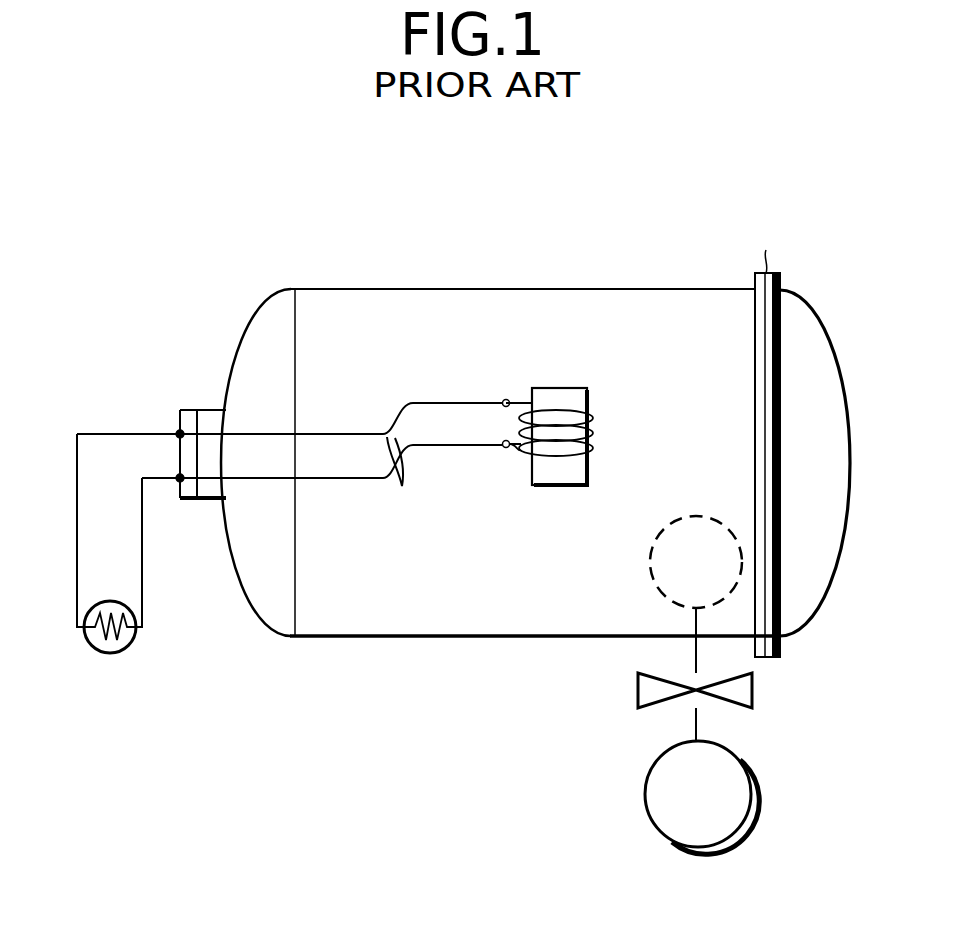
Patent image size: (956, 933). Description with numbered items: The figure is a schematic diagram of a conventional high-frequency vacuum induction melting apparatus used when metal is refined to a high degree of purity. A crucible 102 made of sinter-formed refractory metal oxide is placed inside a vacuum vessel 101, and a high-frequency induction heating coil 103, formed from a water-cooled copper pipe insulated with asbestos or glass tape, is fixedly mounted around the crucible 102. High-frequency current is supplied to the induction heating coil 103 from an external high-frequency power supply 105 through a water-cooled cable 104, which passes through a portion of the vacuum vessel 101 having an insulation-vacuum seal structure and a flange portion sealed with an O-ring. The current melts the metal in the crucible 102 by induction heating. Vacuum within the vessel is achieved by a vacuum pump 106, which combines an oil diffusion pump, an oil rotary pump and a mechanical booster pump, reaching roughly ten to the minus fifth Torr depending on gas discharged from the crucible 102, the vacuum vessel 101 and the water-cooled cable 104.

The vacuum vessel 101 is at (533, 255).
The crucible 102 is at (560, 503).
The high-frequency induction heating coil 103 is at (594, 420).
The water-cooled cable 104 is at (304, 459).
The high-frequency power supply 105 is at (128, 648).
The vacuum pump 106 is at (735, 756).